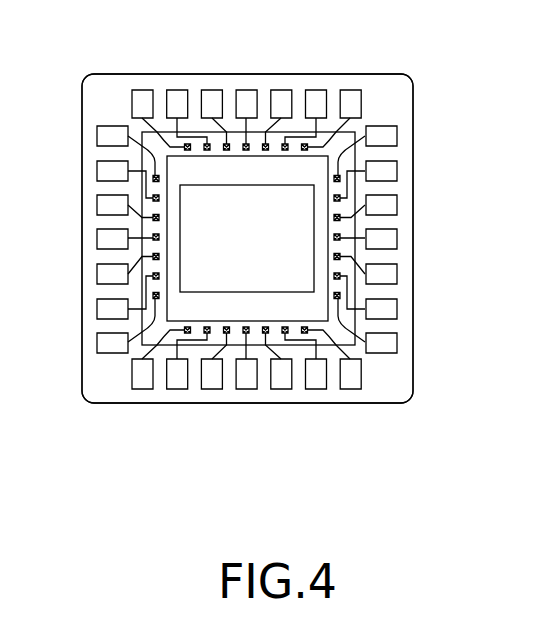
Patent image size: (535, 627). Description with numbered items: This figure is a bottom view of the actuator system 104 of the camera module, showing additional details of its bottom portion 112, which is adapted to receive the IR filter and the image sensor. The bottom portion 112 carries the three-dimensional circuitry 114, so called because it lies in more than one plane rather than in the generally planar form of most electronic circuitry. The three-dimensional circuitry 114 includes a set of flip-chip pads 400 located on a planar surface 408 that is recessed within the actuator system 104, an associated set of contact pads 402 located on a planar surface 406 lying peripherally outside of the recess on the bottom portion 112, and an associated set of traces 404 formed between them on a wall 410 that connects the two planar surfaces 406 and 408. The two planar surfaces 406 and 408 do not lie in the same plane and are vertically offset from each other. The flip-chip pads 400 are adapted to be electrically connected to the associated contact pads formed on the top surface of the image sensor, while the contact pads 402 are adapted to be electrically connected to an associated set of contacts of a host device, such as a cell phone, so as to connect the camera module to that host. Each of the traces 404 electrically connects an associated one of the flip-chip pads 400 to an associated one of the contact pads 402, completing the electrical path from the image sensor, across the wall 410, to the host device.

The actuator system 104 is at (306, 60).
The planar surface 406 is at (404, 90).
The bottom portion 112 is at (86, 120).
The 3D circuitry 114 is at (117, 374).
The contact pads 402 is at (392, 196).
The traces 404 is at (360, 304).
The wall 410 is at (331, 204).
The planar surface 408 is at (347, 249).
The flip-chip pads 400 is at (317, 344).